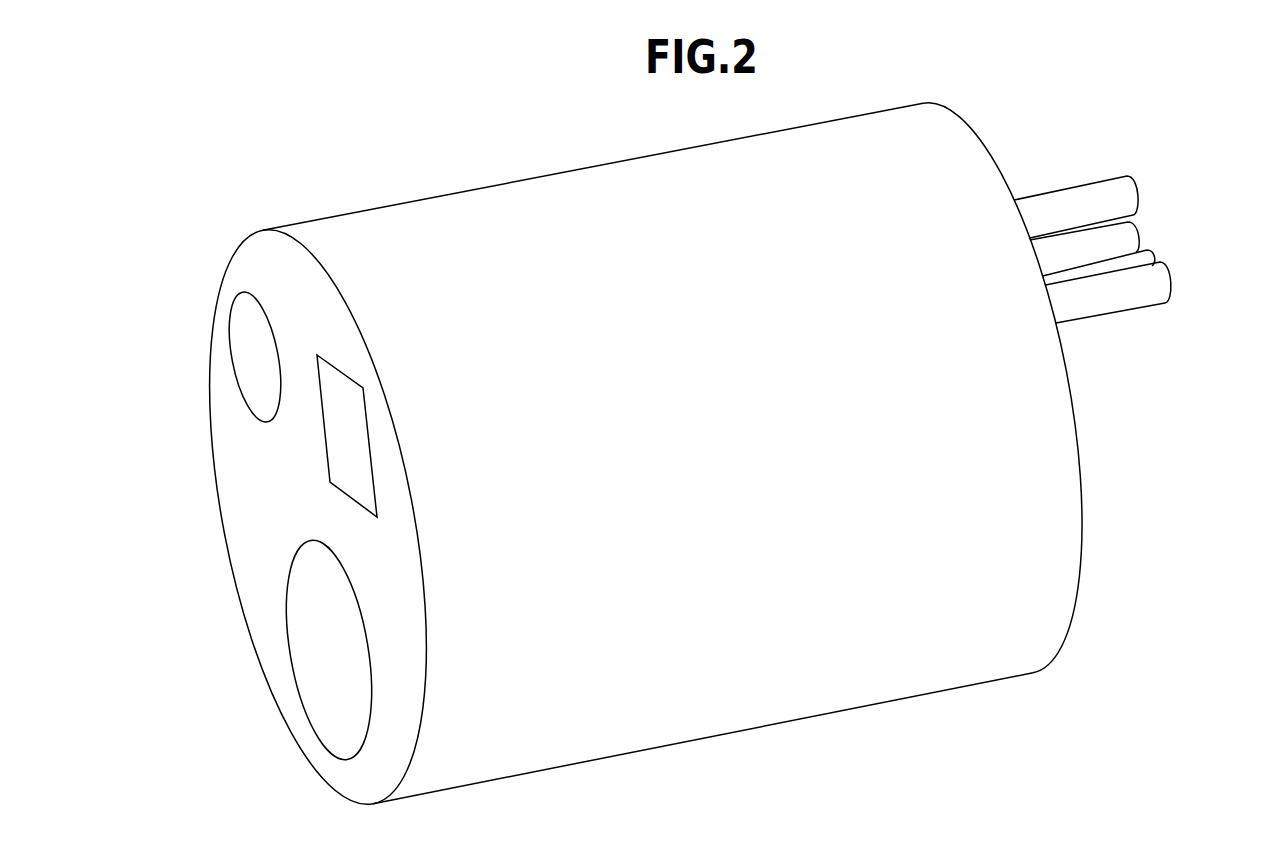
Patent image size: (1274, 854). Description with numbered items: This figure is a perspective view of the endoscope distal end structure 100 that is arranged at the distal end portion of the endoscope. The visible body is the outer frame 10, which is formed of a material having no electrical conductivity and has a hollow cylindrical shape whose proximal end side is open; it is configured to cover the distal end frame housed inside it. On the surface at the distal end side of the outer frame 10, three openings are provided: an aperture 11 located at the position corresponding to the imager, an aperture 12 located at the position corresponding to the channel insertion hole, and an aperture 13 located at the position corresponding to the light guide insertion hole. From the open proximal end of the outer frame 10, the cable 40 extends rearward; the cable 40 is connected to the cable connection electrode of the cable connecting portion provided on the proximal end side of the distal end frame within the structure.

The endoscope distal end structure 100 is at (413, 157).
The outer frame 10 is at (622, 207).
The aperture 11 is at (348, 434).
The aperture 12 is at (330, 649).
The aperture 13 is at (255, 357).
The cable 40 is at (1120, 193).